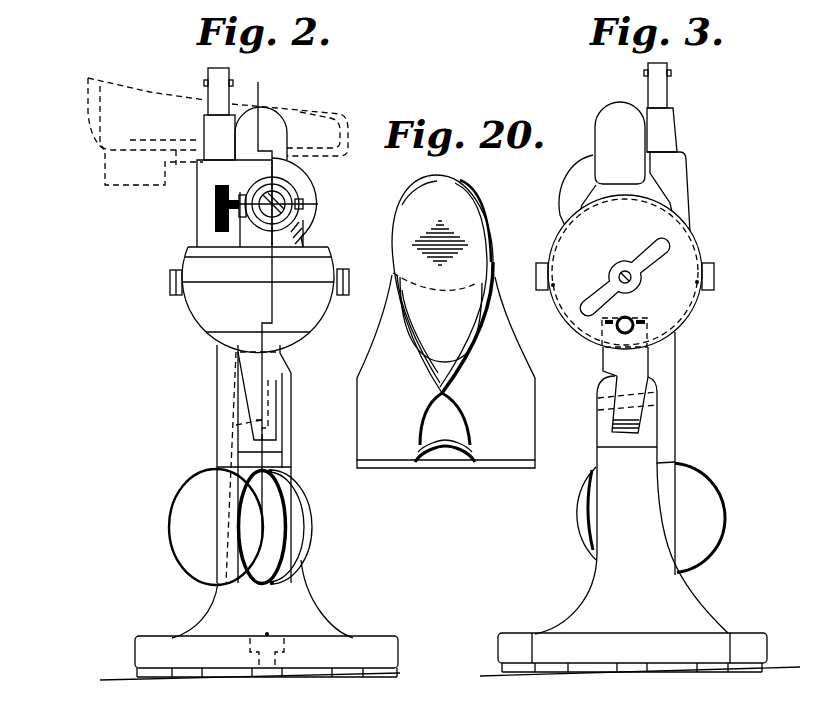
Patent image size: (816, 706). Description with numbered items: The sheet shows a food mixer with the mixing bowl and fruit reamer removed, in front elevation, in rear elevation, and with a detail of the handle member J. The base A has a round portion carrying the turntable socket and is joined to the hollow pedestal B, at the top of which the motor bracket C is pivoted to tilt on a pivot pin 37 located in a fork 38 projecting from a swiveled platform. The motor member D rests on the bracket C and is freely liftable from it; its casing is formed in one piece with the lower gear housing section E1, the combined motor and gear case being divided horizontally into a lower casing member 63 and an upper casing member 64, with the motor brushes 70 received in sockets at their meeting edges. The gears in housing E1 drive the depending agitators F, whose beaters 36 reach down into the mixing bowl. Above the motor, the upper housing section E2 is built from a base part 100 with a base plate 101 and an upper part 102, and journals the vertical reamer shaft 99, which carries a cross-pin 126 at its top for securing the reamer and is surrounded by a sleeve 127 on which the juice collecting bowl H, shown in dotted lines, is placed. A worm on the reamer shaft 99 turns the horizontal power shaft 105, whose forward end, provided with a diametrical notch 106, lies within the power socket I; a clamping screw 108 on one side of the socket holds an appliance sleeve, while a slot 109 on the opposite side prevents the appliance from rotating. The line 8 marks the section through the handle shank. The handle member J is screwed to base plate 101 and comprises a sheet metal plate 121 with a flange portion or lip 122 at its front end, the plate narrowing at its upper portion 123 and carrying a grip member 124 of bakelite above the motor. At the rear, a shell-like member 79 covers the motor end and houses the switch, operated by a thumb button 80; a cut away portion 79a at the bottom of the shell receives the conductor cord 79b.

In FIG. 2, the reamer shaft 99 is at (206, 80).
In FIG. 3, the reamer shaft 99 is at (665, 94).
In FIG. 2, the cross-pin 126 is at (234, 83).
In FIG. 2, the sleeve 127 is at (213, 134).
In FIG. 3, the sleeve 127 is at (668, 128).
In FIG. 2, the handle member J is at (282, 128).
In FIG. 20, the handle member J is at (462, 190).
In FIG. 3, the handle member J is at (605, 123).
In FIG. 2, the juice collecting bowl H is at (92, 104).
In FIG. 2, the section line 8 is at (259, 95).
In FIG. 2, the upper part 102 is at (207, 178).
In FIG. 2, the upper housing section E2 is at (205, 221).
In FIG. 2, the clamping screw 108 is at (217, 201).
In FIG. 2, the power shaft 105 is at (262, 198).
In FIG. 2, the diametrical notch 106 is at (265, 212).
In FIG. 2, the power socket I is at (292, 183).
In FIG. 2, the base part 100 is at (308, 222).
In FIG. 2, the slot 109 is at (311, 203).
In FIG. 2, the motor member D is at (318, 241).
In FIG. 3, the motor member D is at (688, 233).
In FIG. 2, the base plate 101 is at (327, 250).
In FIG. 2, the lower housing section E1 is at (191, 297).
In FIG. 2, the lower casing member 63 is at (318, 313).
In FIG. 2, the brushes 70 is at (172, 280).
In FIG. 3, the brushes 70 is at (713, 279).
In FIG. 2, the upper casing member 64 is at (338, 275).
In FIG. 2, the agitators F is at (221, 363).
In FIG. 3, the agitators F is at (668, 391).
In FIG. 2, the motor bracket C is at (250, 378).
In FIG. 3, the motor bracket C is at (640, 385).
In FIG. 2, the fork 38 is at (285, 398).
In FIG. 3, the fork 38 is at (648, 429).
In FIG. 2, the pivot pin 37 is at (262, 420).
In FIG. 3, the pivot pin 37 is at (657, 408).
In FIG. 2, the beaters 36 is at (171, 519).
In FIG. 3, the beaters 36 is at (726, 512).
In FIG. 2, the pedestal B is at (290, 469).
In FIG. 3, the pedestal B is at (655, 486).
In FIG. 2, the base A is at (152, 648).
In FIG. 3, the base A is at (513, 645).
In FIG. 20, the narrowed upper portion 123 is at (391, 325).
In FIG. 20, the sheet metal plate 121 is at (508, 383).
In FIG. 20, the flange portion or lip 122 is at (496, 464).
In FIG. 20, the grip member 124 is at (470, 217).
In FIG. 3, the shell-like member 79 is at (683, 252).
In FIG. 3, the cut away portion 79a is at (648, 338).
In FIG. 3, the conductor cord 79b is at (652, 321).
In FIG. 3, the thumb button 80 is at (650, 251).